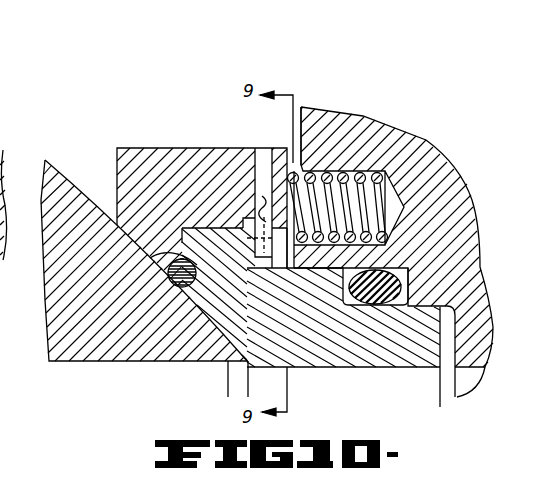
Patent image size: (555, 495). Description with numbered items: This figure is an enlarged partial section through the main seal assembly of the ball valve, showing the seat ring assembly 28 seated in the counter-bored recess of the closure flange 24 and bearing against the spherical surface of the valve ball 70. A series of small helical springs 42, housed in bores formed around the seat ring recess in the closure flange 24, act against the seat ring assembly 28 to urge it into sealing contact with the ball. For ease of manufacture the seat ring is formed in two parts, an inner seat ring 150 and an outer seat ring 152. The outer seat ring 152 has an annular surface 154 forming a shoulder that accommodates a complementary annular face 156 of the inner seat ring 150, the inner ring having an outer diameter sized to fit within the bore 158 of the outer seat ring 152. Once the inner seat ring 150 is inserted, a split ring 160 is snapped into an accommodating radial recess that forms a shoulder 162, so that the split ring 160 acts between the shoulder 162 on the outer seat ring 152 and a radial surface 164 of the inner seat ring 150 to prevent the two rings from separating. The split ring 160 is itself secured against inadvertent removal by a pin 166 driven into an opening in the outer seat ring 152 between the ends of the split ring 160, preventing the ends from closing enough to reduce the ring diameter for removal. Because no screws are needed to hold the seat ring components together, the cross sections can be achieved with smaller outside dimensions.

The closure flange 24 is at (323, 120).
The seat ring assembly 28 is at (358, 389).
The helical spring 42 is at (348, 168).
The valve ball 70 is at (165, 347).
The inner seat ring 150 is at (370, 350).
The outer seat ring 152 is at (165, 158).
The annular surface 154 is at (158, 256).
The annular face 156 is at (170, 252).
The bore 158 is at (222, 236).
The split ring 160 is at (250, 237).
The shoulder 162 is at (308, 133).
The radial surface 164 is at (248, 222).
The pin 166 is at (263, 160).